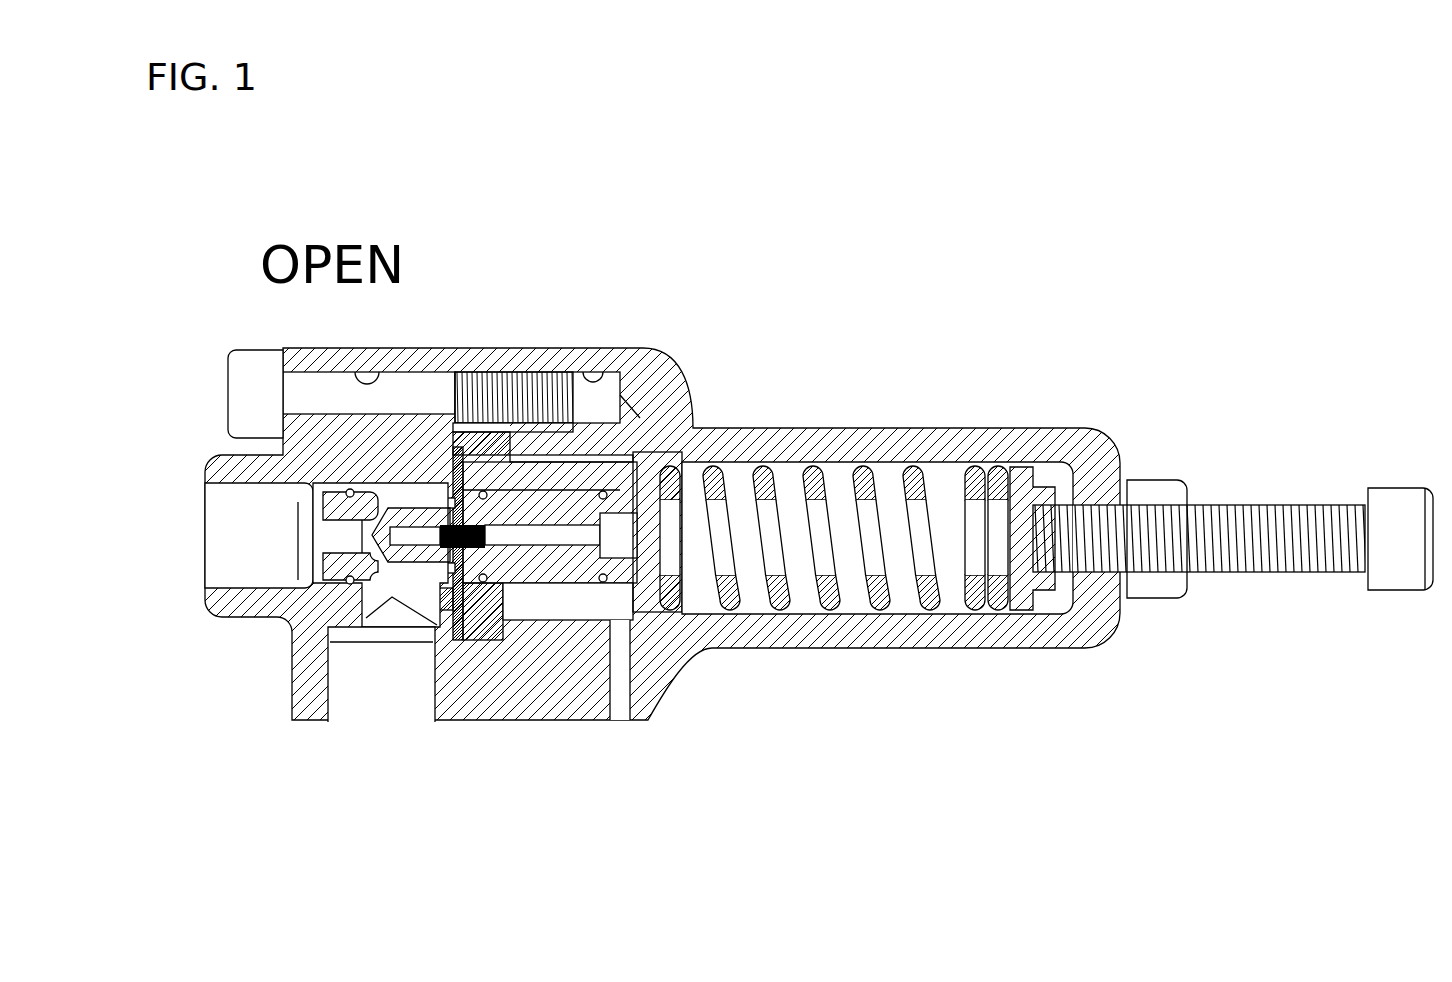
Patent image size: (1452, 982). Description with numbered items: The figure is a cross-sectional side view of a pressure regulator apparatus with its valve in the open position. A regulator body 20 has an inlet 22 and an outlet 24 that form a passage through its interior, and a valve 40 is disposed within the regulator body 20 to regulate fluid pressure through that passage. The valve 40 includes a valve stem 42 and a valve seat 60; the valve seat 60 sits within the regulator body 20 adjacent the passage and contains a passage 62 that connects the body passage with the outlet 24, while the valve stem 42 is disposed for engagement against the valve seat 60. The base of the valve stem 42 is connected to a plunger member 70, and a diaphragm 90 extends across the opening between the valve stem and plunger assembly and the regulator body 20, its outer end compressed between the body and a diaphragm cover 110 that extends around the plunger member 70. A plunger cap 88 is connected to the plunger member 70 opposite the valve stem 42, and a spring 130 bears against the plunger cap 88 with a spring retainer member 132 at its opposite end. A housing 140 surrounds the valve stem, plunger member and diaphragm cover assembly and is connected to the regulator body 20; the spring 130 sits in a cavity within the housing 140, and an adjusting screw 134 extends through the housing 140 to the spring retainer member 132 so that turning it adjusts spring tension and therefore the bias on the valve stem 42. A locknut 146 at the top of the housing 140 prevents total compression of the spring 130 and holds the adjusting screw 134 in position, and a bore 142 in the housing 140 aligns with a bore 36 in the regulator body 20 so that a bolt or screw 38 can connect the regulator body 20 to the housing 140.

The regulator body 20 is at (284, 666).
The inlet 22 is at (372, 712).
The outlet 24 is at (222, 557).
The bore 36 is at (383, 366).
The bolt or screw 38 is at (248, 388).
The valve 40 is at (399, 485).
The valve stem 42 is at (400, 565).
The valve seat 60 is at (333, 510).
The passage 62 is at (422, 606).
The plunger member 70 is at (540, 572).
The plunger cap 88 is at (665, 518).
The diaphragm 90 is at (460, 477).
The diaphragm cover 110 is at (612, 465).
The spring 130 is at (923, 594).
The spring retainer member 132 is at (1022, 478).
The adjusting screw 134 is at (1272, 503).
The housing 140 is at (900, 427).
The bore 142 is at (601, 370).
The locknut 146 is at (1165, 486).